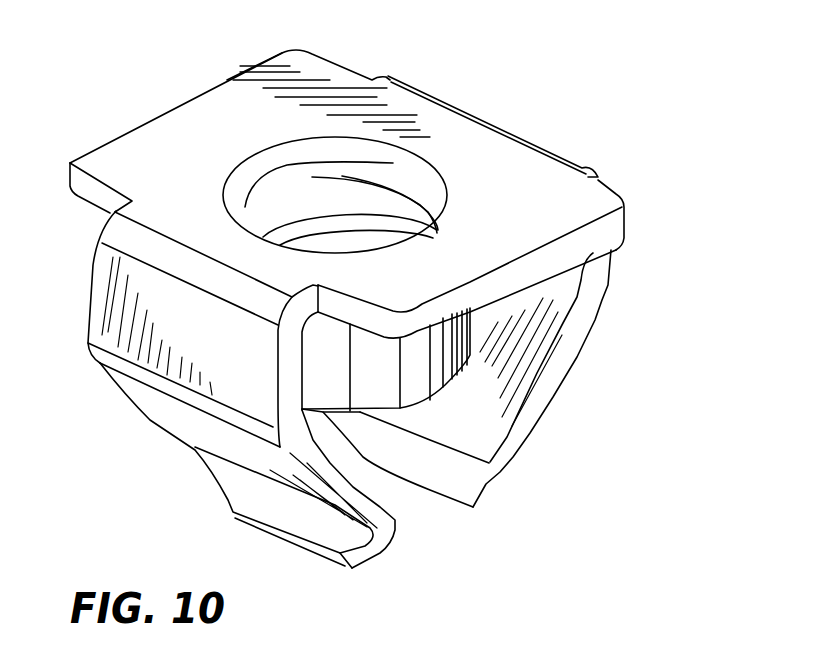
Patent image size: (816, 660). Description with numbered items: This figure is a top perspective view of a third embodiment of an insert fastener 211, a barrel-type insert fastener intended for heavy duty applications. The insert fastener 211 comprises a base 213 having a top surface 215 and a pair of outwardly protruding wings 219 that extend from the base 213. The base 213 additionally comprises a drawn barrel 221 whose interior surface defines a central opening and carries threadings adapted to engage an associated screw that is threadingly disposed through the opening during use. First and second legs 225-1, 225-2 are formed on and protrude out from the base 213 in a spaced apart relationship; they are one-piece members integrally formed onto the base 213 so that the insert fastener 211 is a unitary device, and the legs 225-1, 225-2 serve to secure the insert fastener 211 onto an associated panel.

The insert fastener 211 is at (447, 523).
The base 213 is at (333, 92).
The top surface 215 is at (140, 138).
The outwardly protruding wings 219 is at (227, 78).
The drawn barrel 221 is at (418, 359).
The first leg 225-1 is at (152, 423).
The second leg 225-2 is at (586, 355).